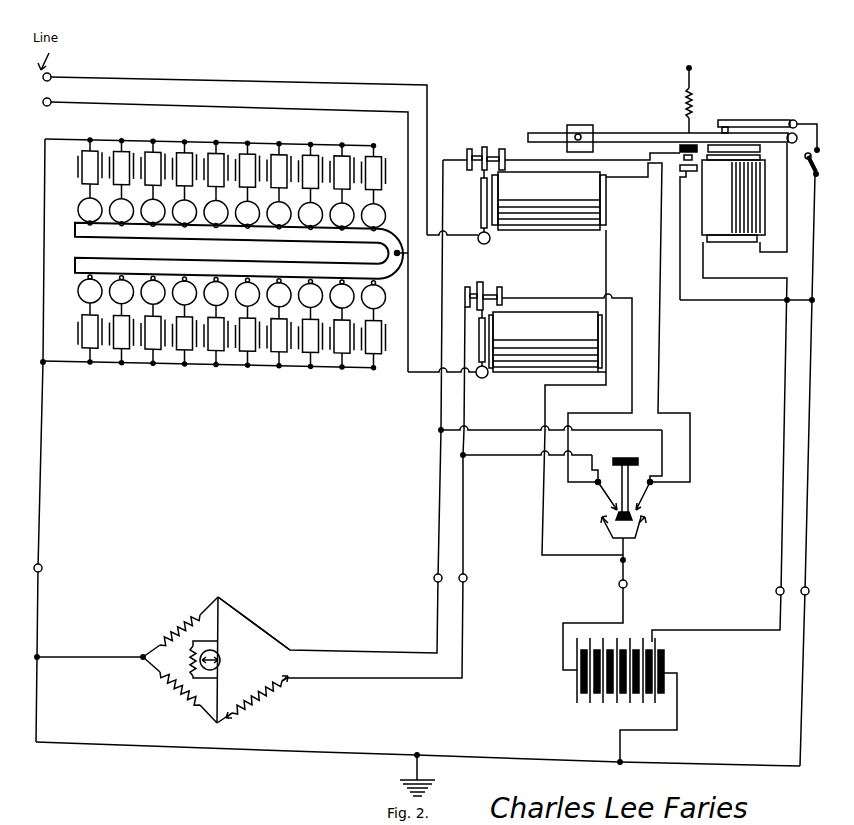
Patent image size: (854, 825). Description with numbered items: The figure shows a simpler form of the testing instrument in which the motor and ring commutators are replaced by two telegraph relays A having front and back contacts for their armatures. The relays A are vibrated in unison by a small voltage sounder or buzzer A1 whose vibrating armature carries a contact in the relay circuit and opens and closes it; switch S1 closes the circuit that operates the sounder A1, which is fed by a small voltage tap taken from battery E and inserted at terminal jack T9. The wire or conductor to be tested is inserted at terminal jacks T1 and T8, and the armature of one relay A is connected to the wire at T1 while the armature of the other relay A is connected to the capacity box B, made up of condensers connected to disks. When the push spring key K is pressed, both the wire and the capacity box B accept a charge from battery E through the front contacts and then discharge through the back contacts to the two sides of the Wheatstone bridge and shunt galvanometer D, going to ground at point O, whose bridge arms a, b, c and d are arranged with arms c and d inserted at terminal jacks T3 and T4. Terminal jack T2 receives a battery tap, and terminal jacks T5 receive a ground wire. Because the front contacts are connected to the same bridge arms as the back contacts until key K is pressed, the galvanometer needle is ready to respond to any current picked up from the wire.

The terminal jack T1 is at (260, 147).
The terminal jack T8 is at (259, 228).
The capacity box B is at (225, 253).
The telegraph relays A is at (578, 351).
The sounder or buzzer A1 is at (747, 367).
The switch S1 is at (815, 150).
The push spring key K is at (632, 492).
The battery E is at (636, 701).
The terminal jack T2 is at (605, 612).
The terminal jack T3 is at (342, 406).
The terminal jack T4 is at (386, 492).
The terminal jacks T5 is at (432, 470).
The terminal jack T9 is at (726, 607).
The ground point O is at (138, 655).
The bridge arm a is at (180, 627).
The bridge arm b is at (180, 690).
The bridge arm c is at (254, 623).
The bridge arm d is at (252, 700).
The Wheatstone bridge and shunt galvanometer D is at (257, 698).